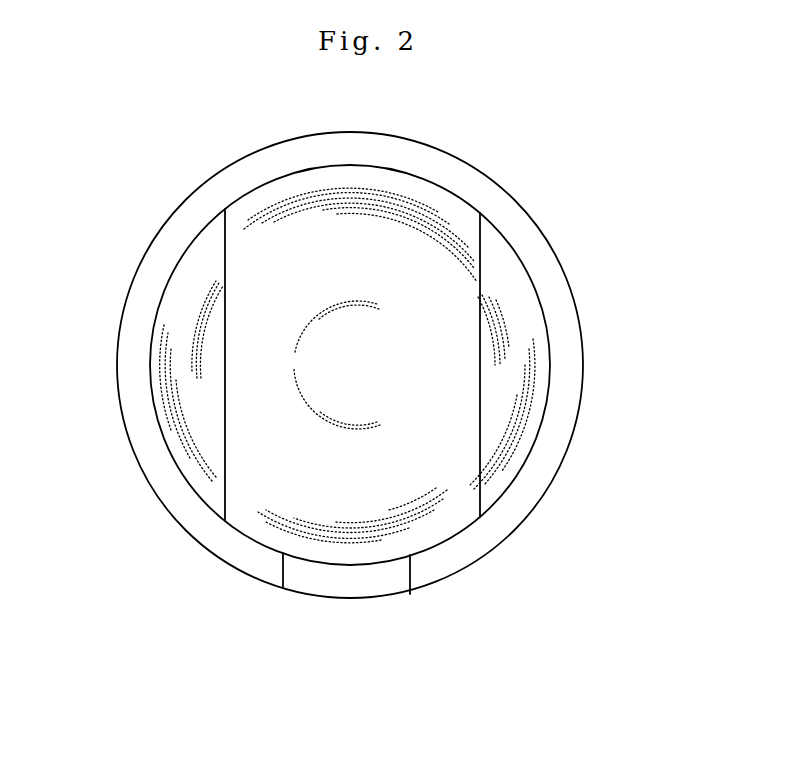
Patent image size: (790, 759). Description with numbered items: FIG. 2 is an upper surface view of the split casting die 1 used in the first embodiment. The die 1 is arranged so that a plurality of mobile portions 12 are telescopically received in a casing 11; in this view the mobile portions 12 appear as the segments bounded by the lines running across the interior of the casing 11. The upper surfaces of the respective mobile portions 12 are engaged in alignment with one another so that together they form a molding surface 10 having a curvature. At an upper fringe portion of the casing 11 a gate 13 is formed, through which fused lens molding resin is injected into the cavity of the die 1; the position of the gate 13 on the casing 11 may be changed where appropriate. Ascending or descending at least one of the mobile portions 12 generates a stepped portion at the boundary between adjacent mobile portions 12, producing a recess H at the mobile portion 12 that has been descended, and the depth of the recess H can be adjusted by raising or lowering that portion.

The casting die 1 is at (523, 198).
The molding surface 10 is at (281, 236).
The casing 11 is at (583, 378).
The mobile portion 12 is at (447, 228).
The gate 13 is at (345, 604).
The recess H is at (448, 520).